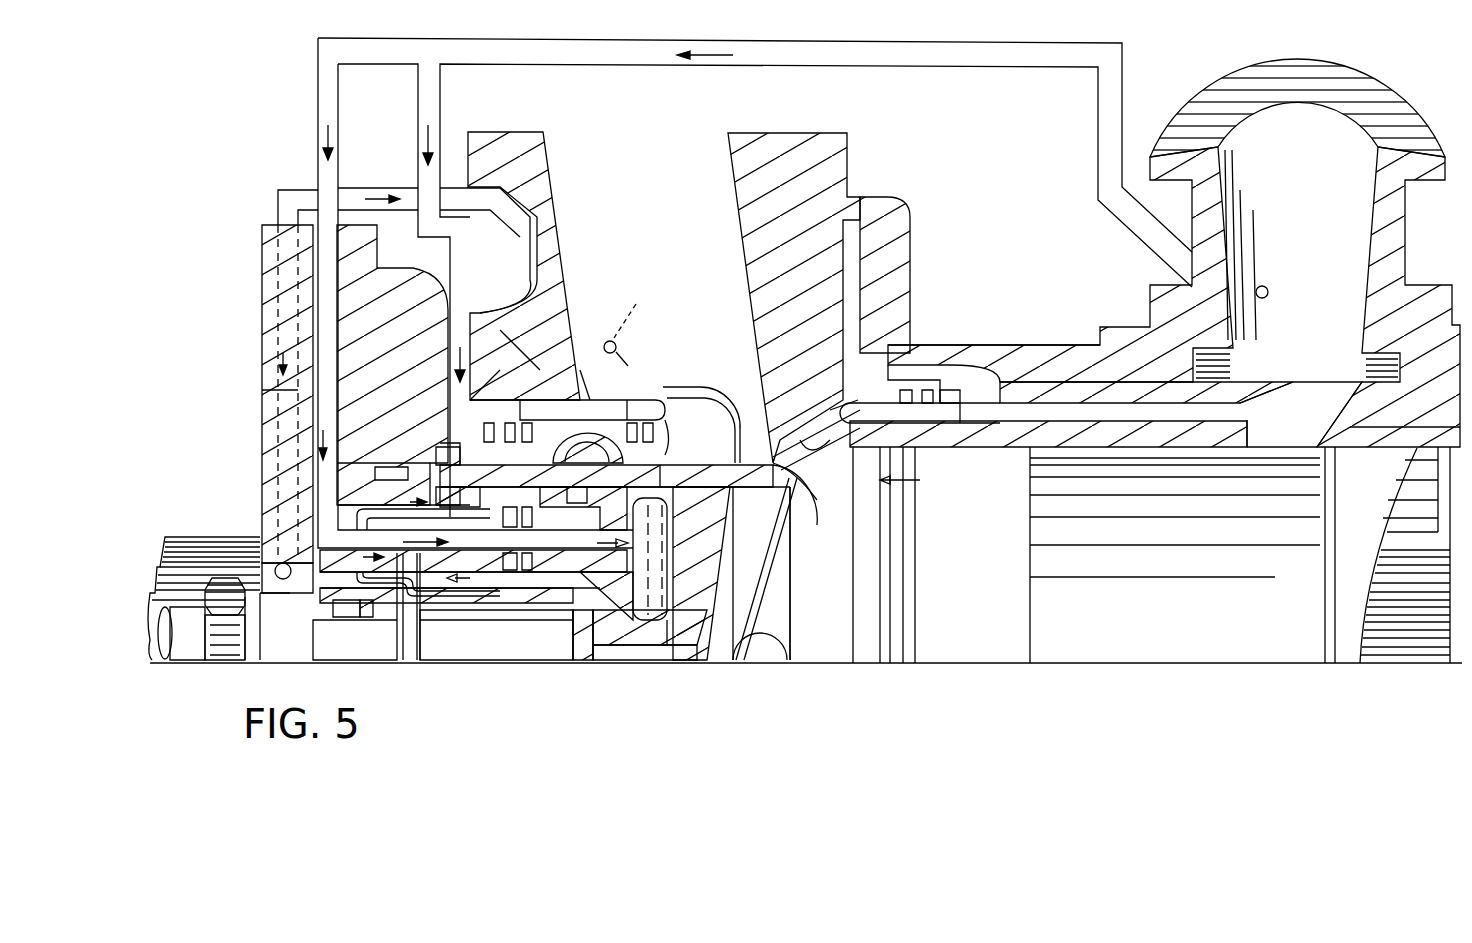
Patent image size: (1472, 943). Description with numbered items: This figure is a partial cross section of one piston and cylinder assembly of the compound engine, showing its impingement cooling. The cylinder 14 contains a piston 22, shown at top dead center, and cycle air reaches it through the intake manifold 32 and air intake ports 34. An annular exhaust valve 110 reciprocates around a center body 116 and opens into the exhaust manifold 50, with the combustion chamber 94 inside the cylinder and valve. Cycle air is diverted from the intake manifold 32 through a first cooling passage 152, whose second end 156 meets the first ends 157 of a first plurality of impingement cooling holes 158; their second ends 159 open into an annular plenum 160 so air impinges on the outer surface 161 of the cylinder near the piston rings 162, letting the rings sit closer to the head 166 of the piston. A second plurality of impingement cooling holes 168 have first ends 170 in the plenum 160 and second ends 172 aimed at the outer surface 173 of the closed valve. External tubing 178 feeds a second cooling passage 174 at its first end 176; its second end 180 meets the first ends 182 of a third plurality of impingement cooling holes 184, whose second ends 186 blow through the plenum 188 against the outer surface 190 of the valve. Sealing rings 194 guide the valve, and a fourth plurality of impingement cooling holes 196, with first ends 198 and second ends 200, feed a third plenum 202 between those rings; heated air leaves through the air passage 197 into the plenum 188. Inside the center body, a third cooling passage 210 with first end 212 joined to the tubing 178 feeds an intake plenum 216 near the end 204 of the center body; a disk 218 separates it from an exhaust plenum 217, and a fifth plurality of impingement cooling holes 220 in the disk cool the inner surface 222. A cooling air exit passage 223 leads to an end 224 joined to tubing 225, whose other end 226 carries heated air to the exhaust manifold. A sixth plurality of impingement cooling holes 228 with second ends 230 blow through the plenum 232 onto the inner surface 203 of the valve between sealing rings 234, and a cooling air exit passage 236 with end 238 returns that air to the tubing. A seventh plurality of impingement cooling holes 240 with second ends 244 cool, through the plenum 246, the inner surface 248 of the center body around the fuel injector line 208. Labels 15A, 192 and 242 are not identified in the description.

The cylinder 14 is at (1368, 420).
The port 15A is at (1247, 415).
The piston 22 is at (1290, 447).
The intake manifold 32 is at (1338, 140).
The air intake ports 34 is at (1293, 400).
The exhaust manifold 50 is at (672, 150).
The combustion chamber 94 is at (760, 542).
The annular exhaust valve 110 is at (710, 410).
The center body 116 is at (755, 665).
The first cooling passage 152 is at (1030, 405).
The second end of the first cooling passage 156 is at (888, 380).
The first ends of the first impingement cooling holes 157 is at (930, 380).
The first plurality of impingement cooling holes 158 is at (860, 400).
The second ends of the first impingement cooling holes 159 is at (955, 425).
The annular plenum 160 is at (930, 423).
The outer surface of the cylinder 161 is at (990, 378).
The piston rings 162 is at (910, 485).
The head of the piston 166 is at (830, 627).
The second plurality of impingement cooling holes 168 is at (812, 440).
The first ends of the second impingement cooling holes 170 is at (830, 390).
The second ends of the second impingement cooling holes 172 is at (800, 440).
The outer surface of the exhaust valve end 173 is at (812, 500).
The second cooling passage 174 is at (526, 350).
The first end of the second cooling passage 176 is at (490, 384).
The external tubing 178 is at (824, 42).
The second end of the second cooling passage 180 is at (701, 410).
The first ends of the third impingement cooling holes 182 is at (668, 402).
The third plurality of impingement cooling holes 184 is at (670, 428).
The second ends of the third impingement cooling holes 186 is at (675, 448).
The second plenum 188 is at (672, 486).
The outer surface of the exhaust valve 190 is at (633, 400).
The ring 192 is at (590, 450).
The sealing rings 194 is at (608, 360).
The fourth plurality of impingement cooling holes 196 is at (484, 432).
The air passage 197 is at (628, 493).
The first ends of the fourth impingement cooling holes 198 is at (512, 420).
The second ends of the fourth impingement cooling holes 200 is at (532, 422).
The third plenum 202 is at (569, 458).
The inner surface of the exhaust valve 203 is at (545, 512).
The end of the center body 204 is at (775, 575).
The fuel injector line 208 is at (480, 660).
The third cooling passage 210 is at (403, 367).
The first end of the third cooling passage 212 is at (340, 530).
The intake plenum 216 is at (633, 578).
The exhaust plenum 217 is at (662, 640).
The circular disk 218 is at (640, 640).
The fifth plurality of impingement cooling holes 220 is at (705, 505).
The inner surface adjacent the center body end 222 is at (665, 575).
The cooling air exit passage 223 is at (555, 612).
The opposite end of the cooling air exit passage 224 is at (288, 580).
The tubing 225 is at (300, 187).
The other end of the tubing 226 is at (630, 324).
The sixth plurality of impingement cooling holes 228 is at (490, 550).
The second ends of the sixth impingement cooling holes 230 is at (585, 541).
The fifth plenum 232 is at (483, 495).
The center body sealing rings 234 is at (535, 476).
The cooling air exit passage 236 is at (436, 456).
The other end of the exit passage 238 is at (473, 573).
The seventh plurality of impingement cooling holes 240 is at (478, 598).
The spacer 242 is at (583, 655).
The second ends of the seventh impingement cooling holes 244 is at (525, 605).
The plenum 246 is at (425, 640).
The inner surface of the center body 248 is at (400, 655).